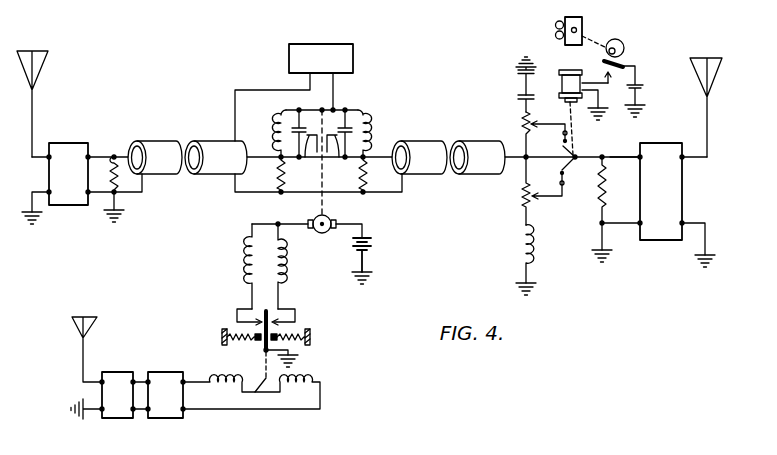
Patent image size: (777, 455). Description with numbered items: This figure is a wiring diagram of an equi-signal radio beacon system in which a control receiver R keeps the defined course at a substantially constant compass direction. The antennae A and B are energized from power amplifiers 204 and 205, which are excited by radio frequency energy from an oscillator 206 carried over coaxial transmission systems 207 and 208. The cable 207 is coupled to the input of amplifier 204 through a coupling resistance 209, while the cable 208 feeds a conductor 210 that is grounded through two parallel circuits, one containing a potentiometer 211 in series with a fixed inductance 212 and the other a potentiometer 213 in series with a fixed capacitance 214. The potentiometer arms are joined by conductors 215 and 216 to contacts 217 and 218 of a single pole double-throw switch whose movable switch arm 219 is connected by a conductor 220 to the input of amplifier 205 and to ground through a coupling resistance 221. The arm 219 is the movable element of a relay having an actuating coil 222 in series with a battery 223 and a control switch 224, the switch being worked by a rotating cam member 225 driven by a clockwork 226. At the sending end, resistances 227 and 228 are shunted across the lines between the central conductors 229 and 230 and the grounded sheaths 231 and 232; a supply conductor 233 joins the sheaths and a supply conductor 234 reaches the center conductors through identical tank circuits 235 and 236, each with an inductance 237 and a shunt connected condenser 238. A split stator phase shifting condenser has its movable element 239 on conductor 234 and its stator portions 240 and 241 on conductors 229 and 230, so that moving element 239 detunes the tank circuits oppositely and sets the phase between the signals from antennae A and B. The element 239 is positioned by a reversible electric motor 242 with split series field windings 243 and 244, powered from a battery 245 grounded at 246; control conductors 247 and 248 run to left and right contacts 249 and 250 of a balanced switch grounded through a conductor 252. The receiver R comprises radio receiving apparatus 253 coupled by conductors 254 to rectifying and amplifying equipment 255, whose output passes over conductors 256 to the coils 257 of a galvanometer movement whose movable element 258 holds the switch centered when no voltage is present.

The antenna A is at (43, 84).
The antenna B is at (720, 64).
The receiver R is at (82, 350).
The power amplifier 204 is at (70, 206).
The power amplifier 205 is at (645, 241).
The oscillator 206 is at (328, 44).
The radio frequency transmission system 207 is at (163, 140).
The radio frequency transmission system 208 is at (437, 141).
The coupling resistance 209 is at (114, 155).
The conductor 210 is at (521, 153).
The potentiometer 211 is at (522, 200).
The fixed inductance 212 is at (520, 254).
The potentiometer 213 is at (523, 113).
The fixed capacitance 214 is at (522, 90).
The conductor 215 is at (548, 197).
The conductor 216 is at (562, 141).
The contact 217 is at (598, 180).
The contact 218 is at (570, 148).
The movable switch arm 219 is at (573, 165).
The conductor 220 is at (624, 156).
The coupling resistance 221 is at (599, 210).
The actuating coil 222 is at (566, 83).
The battery 223 is at (645, 90).
The control switch 224 is at (625, 64).
The rotating cam member 225 is at (622, 43).
The clockwork 226 is at (582, 25).
The resistance 227 is at (280, 190).
The resistance 228 is at (364, 193).
The central conductor 229 is at (268, 159).
The central conductor 230 is at (375, 156).
The outer grounded sheath 231 is at (212, 177).
The outer grounded sheath 232 is at (415, 178).
The supply conductor 233 is at (250, 90).
The supply conductor 234 is at (338, 82).
The tank circuit 235 is at (288, 109).
The tank circuit 236 is at (385, 122).
The inductance 237 is at (273, 130).
The shunt connected condenser 238 is at (338, 127).
The movable element 239 is at (321, 128).
The stator portion 240 is at (305, 160).
The stator portion 241 is at (334, 160).
The reversible electric motor 242 is at (313, 233).
The split series field winding 243 is at (248, 258).
The split series field winding 244 is at (284, 278).
The battery 245 is at (375, 250).
The ground 246 is at (375, 272).
The control conductor 247 is at (251, 297).
The control conductor 248 is at (281, 298).
The left contact 249 is at (235, 321).
The right contact 250 is at (296, 318).
The conductor 252 is at (289, 352).
The radio receiving apparatus 253 is at (112, 418).
The conductors 254 is at (141, 411).
The rectifying and amplifying equipment 255 is at (175, 419).
The conductors 256 is at (210, 410).
The coils 257 is at (228, 379).
The movable element 258 is at (258, 390).